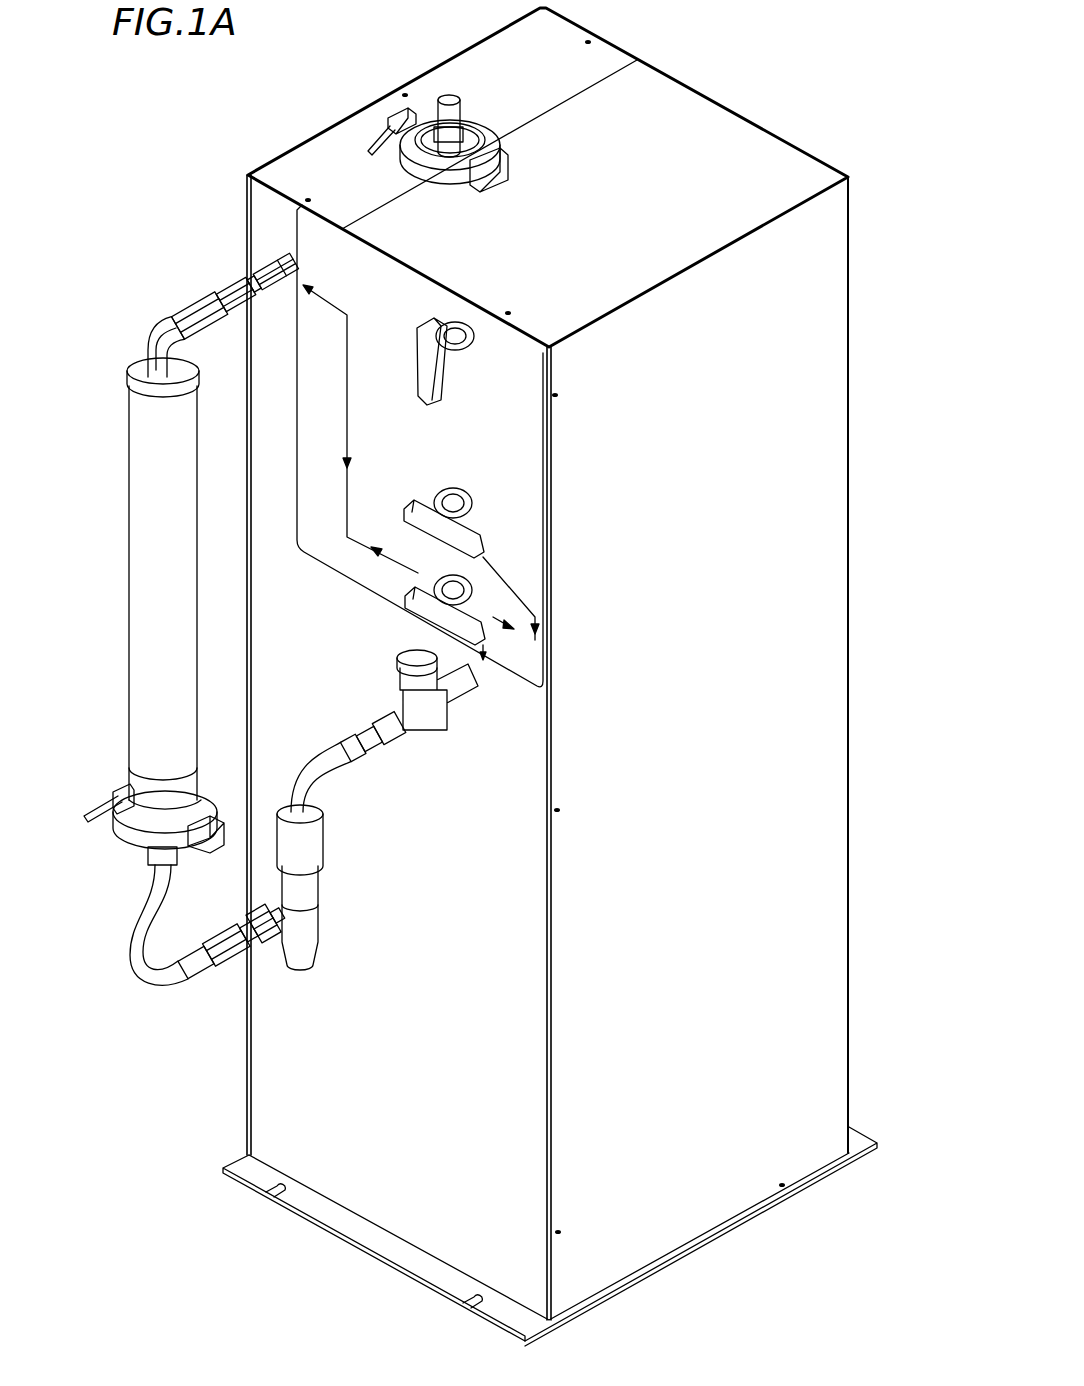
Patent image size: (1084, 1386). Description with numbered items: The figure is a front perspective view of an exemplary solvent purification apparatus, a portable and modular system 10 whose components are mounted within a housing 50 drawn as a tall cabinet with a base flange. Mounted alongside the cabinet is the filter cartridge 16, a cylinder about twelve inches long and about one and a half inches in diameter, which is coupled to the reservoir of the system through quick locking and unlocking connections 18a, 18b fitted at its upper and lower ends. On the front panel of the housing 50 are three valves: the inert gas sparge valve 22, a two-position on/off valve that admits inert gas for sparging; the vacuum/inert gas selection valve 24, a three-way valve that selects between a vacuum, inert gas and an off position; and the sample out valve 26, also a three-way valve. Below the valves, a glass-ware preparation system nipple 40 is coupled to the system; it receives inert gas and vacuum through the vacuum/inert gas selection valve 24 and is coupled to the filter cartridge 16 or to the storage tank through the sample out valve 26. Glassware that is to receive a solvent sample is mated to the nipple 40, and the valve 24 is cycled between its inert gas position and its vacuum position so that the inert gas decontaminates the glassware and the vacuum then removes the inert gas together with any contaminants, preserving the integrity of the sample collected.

The portable system 10 is at (576, 677).
The filter cartridge 16 is at (150, 603).
The quick locking and unlocking connection 18a is at (210, 300).
The quick locking and unlocking connection 18b is at (233, 970).
The inert gas sparge valve 22 is at (440, 400).
The vacuum/inert gas selection valve 24 is at (483, 553).
The sample out valve 26 is at (483, 642).
The glass-ware preparation system nipple 40 is at (303, 950).
The housing 50 is at (762, 822).